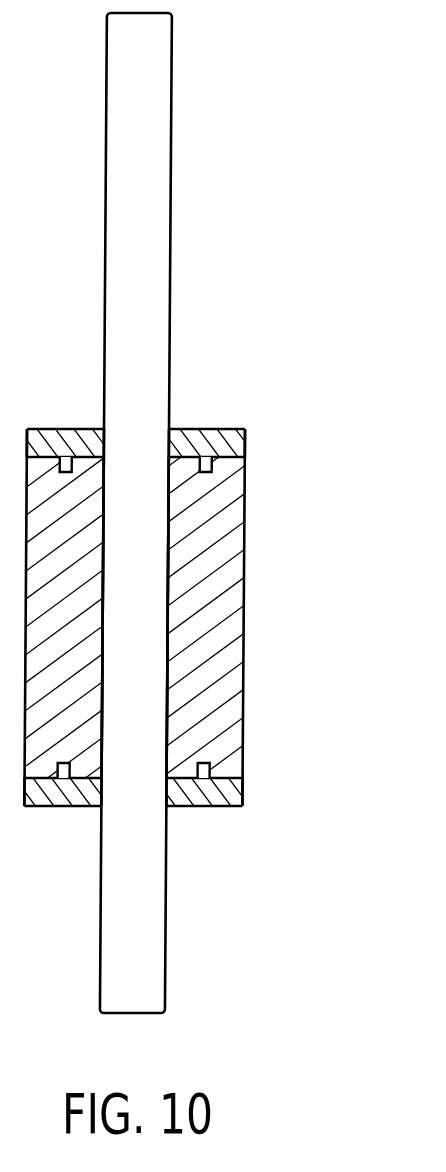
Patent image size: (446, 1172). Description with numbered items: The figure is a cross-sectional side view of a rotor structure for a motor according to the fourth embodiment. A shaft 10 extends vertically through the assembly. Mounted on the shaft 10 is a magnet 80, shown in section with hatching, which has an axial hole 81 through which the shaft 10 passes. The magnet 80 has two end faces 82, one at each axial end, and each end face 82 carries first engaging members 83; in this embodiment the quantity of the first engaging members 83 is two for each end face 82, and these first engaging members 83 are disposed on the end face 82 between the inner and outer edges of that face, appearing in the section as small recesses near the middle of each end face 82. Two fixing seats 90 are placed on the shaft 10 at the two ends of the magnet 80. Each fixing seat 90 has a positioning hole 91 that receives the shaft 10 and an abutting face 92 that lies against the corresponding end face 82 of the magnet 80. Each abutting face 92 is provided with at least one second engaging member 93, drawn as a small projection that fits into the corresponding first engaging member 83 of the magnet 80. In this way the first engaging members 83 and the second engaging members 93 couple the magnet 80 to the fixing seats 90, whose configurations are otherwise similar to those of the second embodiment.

The shaft 10 is at (150, 272).
The magnet 80 is at (225, 612).
The axial hole 81 is at (167, 615).
The end face 82 is at (247, 437).
The first engaging member 83 is at (208, 474).
The fixing seat 90 is at (223, 438).
The positioning hole 91 is at (169, 442).
The abutting face 92 is at (205, 619).
The second engaging member 93 is at (240, 617).